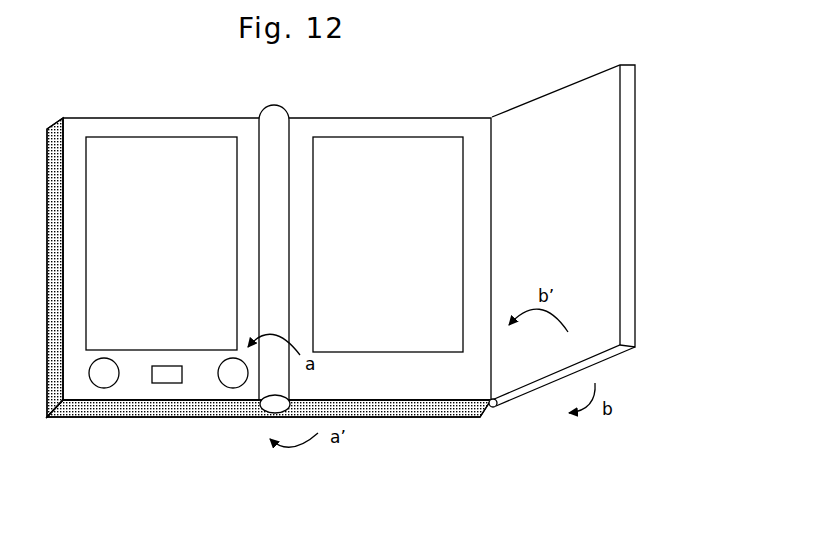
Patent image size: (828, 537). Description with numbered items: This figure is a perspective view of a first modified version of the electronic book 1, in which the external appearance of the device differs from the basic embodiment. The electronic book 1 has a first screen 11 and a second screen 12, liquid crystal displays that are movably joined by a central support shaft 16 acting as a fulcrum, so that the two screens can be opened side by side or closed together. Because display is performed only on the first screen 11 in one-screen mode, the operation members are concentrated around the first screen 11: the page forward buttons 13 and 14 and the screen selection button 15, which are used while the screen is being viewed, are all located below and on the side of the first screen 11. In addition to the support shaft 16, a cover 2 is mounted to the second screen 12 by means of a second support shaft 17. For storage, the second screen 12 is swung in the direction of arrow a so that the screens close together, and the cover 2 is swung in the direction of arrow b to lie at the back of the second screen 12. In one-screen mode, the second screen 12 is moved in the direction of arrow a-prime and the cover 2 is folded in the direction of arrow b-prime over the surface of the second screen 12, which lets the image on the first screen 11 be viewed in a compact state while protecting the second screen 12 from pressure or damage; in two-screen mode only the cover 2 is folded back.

The electronic book 1 is at (293, 103).
The cover 2 is at (636, 190).
The first screen 11 is at (161, 243).
The second screen 12 is at (388, 244).
The page forward button 13 is at (102, 389).
The page forward button 14 is at (232, 389).
The screen selection button 15 is at (167, 385).
The support shaft 16 is at (273, 414).
The support shaft 17 is at (496, 407).